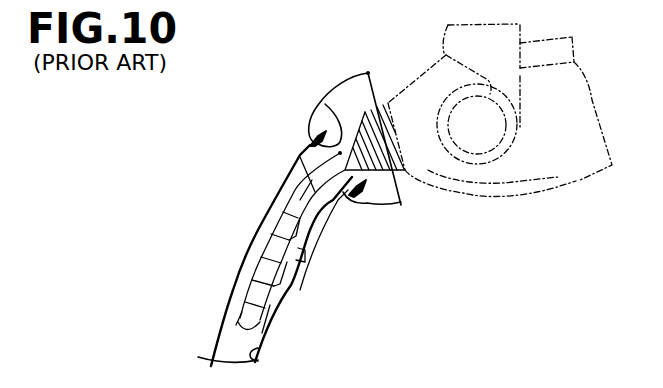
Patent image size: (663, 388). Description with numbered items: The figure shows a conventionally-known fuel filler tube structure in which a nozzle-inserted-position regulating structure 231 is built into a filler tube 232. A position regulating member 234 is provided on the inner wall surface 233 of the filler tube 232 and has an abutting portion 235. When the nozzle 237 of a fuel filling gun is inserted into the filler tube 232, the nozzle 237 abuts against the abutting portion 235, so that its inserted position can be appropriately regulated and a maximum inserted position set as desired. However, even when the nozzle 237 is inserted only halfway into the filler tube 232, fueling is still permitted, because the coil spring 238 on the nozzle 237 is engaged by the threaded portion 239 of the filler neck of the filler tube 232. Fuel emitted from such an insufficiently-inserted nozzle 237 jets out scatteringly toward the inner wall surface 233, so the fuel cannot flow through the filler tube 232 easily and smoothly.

The nozzle-inserted-position regulating structure 231 is at (290, 217).
The filler tube 232 is at (265, 333).
The inner wall surface 233 is at (260, 357).
The position regulating member 234 is at (303, 228).
The abutting portion 235 is at (222, 330).
The nozzle 237 is at (300, 200).
The spring 238 is at (300, 157).
The threaded portion 239 is at (325, 104).